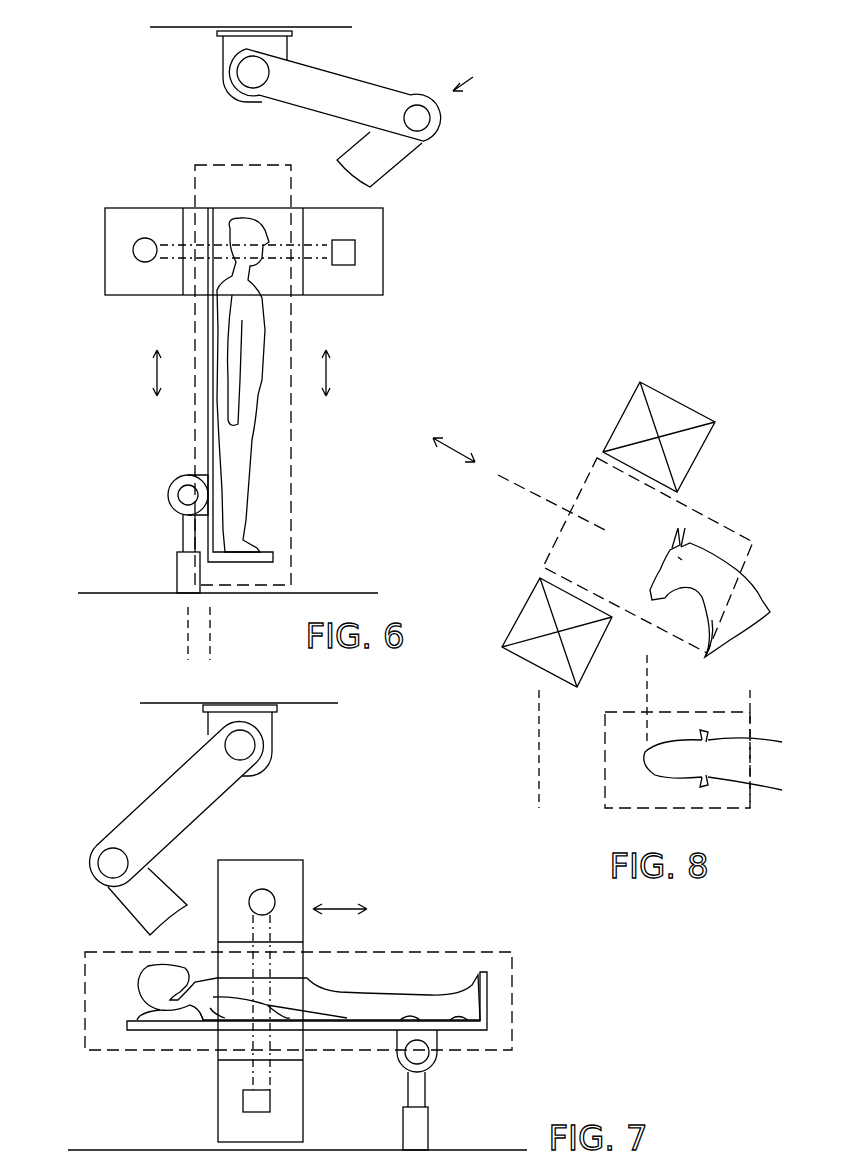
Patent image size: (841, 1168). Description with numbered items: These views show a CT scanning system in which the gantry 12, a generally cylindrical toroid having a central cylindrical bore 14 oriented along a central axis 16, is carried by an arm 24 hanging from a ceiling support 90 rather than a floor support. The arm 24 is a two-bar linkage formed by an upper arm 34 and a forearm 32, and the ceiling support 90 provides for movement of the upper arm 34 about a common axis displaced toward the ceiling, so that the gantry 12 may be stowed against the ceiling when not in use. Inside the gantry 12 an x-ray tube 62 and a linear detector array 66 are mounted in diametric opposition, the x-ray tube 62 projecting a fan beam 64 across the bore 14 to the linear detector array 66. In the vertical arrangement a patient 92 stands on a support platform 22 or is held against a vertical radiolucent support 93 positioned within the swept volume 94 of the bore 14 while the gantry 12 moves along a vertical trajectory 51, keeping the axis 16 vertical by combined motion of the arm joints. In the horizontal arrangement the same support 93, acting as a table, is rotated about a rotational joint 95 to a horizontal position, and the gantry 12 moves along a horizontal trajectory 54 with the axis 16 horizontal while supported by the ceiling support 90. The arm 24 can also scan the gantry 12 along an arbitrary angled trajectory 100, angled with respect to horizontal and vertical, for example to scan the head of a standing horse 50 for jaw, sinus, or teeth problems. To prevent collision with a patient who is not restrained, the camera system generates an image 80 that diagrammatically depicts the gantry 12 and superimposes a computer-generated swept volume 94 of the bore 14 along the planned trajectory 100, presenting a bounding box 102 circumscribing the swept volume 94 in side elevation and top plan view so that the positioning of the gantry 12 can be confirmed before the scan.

In FIG. 6, the gantry 12 is at (105, 255).
In FIG. 7, the gantry 12 is at (242, 860).
In FIG. 8, the gantry 12 is at (678, 400).
In FIG. 6, the central cylindrical bore 14 is at (197, 225).
In FIG. 8, the central cylindrical bore 14 is at (617, 467).
In FIG. 6, the central axis 16 is at (188, 627).
In FIG. 8, the central axis 16 is at (515, 482).
In FIG. 6, the support platform 22 is at (237, 595).
In FIG. 6, the arm 24 is at (478, 77).
In FIG. 6, the forearm 32 is at (382, 157).
In FIG. 6, the upper arm 34 is at (337, 83).
In FIG. 7, the upper arm 34 is at (162, 787).
In FIG. 8, the standing horse 50 is at (742, 598).
In FIG. 6, the vertical trajectory 51 is at (330, 373).
In FIG. 7, the horizontal trajectory 54 is at (342, 907).
In FIG. 6, the x-ray tube 62 is at (136, 240).
In FIG. 6, the fan beam 64 is at (317, 262).
In FIG. 6, the linear detector array 66 is at (357, 252).
In FIG. 8, the image 80 is at (773, 440).
In FIG. 6, the ceiling support 90 is at (223, 55).
In FIG. 7, the ceiling support 90 is at (262, 722).
In FIG. 6, the patient 92 is at (232, 488).
In FIG. 7, the patient 92 is at (367, 1000).
In FIG. 6, the vertical radiolucent support 93 is at (208, 455).
In FIG. 7, the vertical radiolucent support 93 is at (160, 1030).
In FIG. 6, the swept volume 94 is at (192, 413).
In FIG. 7, the swept volume 94 is at (85, 1000).
In FIG. 8, the swept volume 94 is at (710, 513).
In FIG. 6, the rotational joint 95 is at (172, 513).
In FIG. 7, the rotational joint 95 is at (397, 1067).
In FIG. 8, the angled trajectory 100 is at (450, 457).
In FIG. 8, the bounding box 102 is at (545, 562).